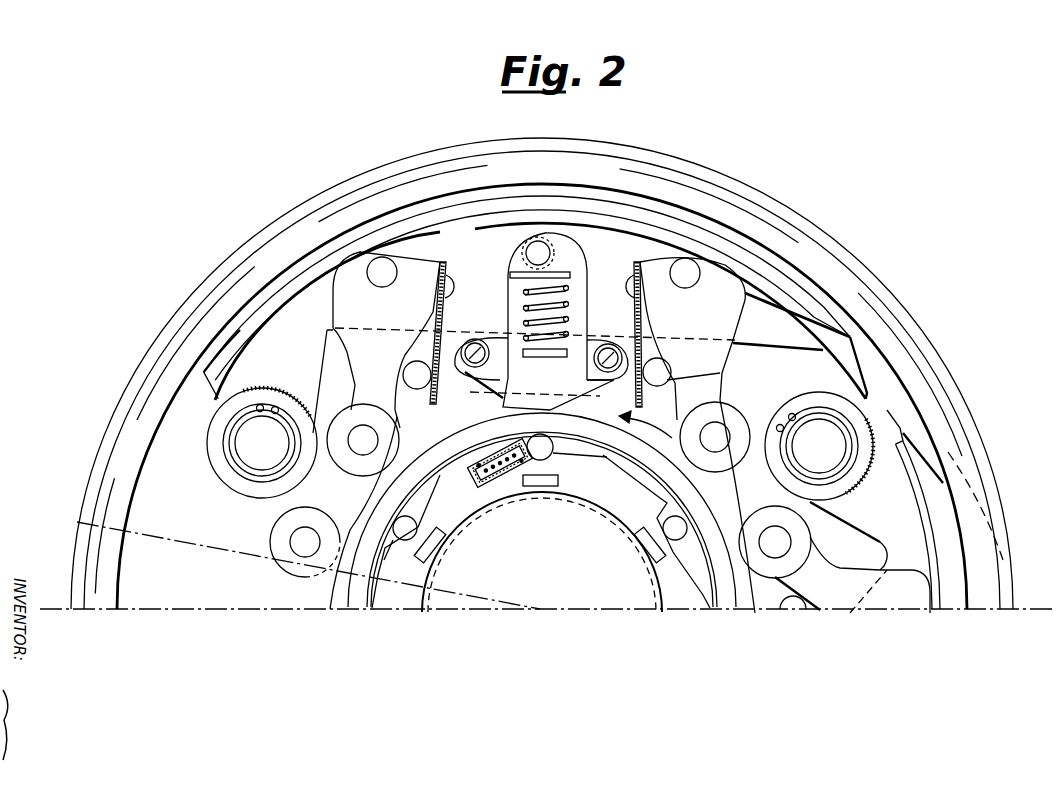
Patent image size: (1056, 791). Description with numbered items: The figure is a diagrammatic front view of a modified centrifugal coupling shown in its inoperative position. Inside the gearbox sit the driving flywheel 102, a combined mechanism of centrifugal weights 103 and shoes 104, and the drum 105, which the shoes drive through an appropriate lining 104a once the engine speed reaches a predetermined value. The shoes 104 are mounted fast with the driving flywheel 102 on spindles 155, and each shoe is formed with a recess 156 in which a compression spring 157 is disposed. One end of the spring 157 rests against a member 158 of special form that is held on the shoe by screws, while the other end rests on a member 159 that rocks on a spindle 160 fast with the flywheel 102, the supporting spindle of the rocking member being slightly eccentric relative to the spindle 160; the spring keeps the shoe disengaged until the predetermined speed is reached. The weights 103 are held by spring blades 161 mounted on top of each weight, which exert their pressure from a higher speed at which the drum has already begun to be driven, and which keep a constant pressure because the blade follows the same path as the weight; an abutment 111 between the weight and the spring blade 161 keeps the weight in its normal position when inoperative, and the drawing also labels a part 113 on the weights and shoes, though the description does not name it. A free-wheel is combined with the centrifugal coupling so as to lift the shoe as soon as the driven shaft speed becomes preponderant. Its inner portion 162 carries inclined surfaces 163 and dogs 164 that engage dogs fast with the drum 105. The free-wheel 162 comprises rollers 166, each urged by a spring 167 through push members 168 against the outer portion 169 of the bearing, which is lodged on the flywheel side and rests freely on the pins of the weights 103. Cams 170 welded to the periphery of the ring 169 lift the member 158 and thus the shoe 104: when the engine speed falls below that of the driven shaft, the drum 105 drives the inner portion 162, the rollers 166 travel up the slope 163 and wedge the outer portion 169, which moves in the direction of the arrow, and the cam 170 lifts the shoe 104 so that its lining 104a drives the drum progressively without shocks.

The flywheel 102 is at (157, 475).
The centrifugal weights 103 is at (340, 314).
The shoes 104 is at (848, 362).
The lining 104a is at (388, 236).
The drum 105 is at (908, 393).
The abutment 111 is at (418, 390).
The roller 113 is at (358, 450).
The spindles 155 is at (250, 450).
The recess 156 is at (590, 272).
The compression spring 157 is at (566, 300).
The member of special form 158 is at (492, 390).
The rocking member 159 is at (512, 272).
The spindle 160 is at (538, 241).
The spring blades 161 is at (447, 312).
The inner portion of free-wheel 162 is at (686, 592).
The inclined surfaces 163 is at (590, 456).
The dogs 164 is at (543, 486).
The rollers 166 is at (402, 542).
The spring 167 is at (477, 478).
The push members 168 is at (517, 467).
The outer portion 169 is at (634, 468).
The cams 170 is at (647, 416).